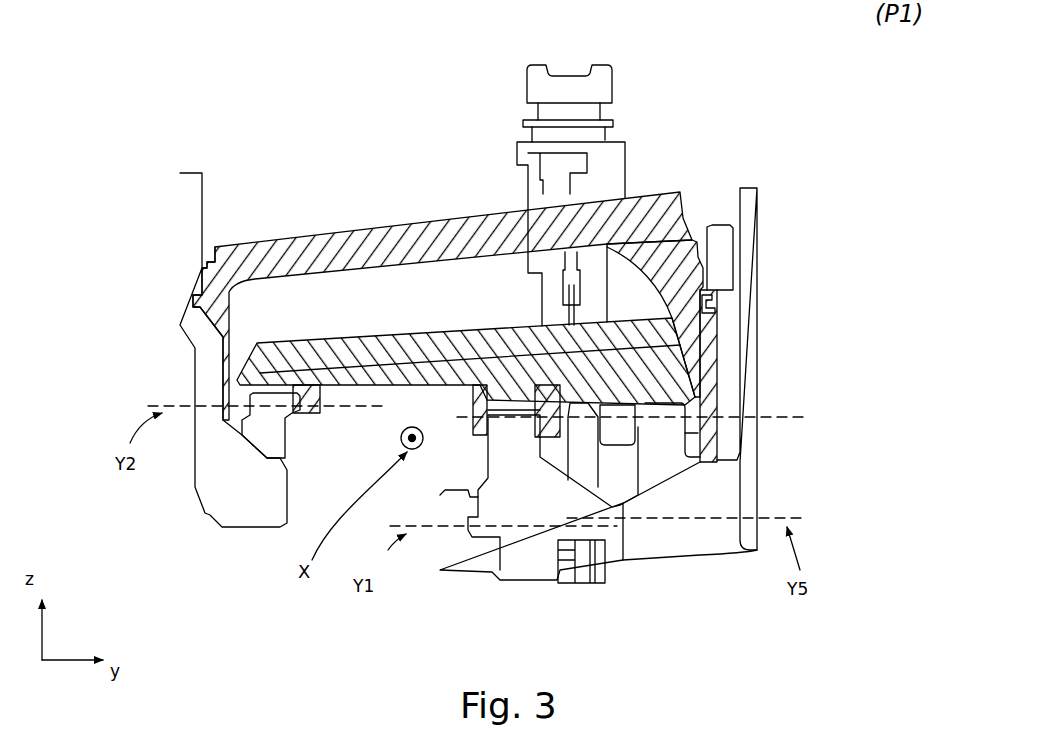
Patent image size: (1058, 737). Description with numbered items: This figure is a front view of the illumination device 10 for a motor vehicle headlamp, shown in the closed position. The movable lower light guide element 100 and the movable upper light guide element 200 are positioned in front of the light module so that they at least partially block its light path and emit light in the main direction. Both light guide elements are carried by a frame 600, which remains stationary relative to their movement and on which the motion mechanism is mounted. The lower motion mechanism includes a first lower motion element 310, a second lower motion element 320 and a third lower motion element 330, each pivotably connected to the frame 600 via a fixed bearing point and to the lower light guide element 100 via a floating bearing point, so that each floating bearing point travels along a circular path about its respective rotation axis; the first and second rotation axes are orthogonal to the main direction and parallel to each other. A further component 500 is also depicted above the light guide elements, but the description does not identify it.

The illumination device 10 is at (172, 106).
The lower light guide element 100 is at (398, 345).
The upper light guide element 200 is at (372, 242).
The first lower motion element 310 is at (528, 565).
The second lower motion element 320 is at (272, 436).
The third lower motion element 330 is at (666, 437).
The actuator 500 is at (642, 101).
The frame 600 is at (205, 398).